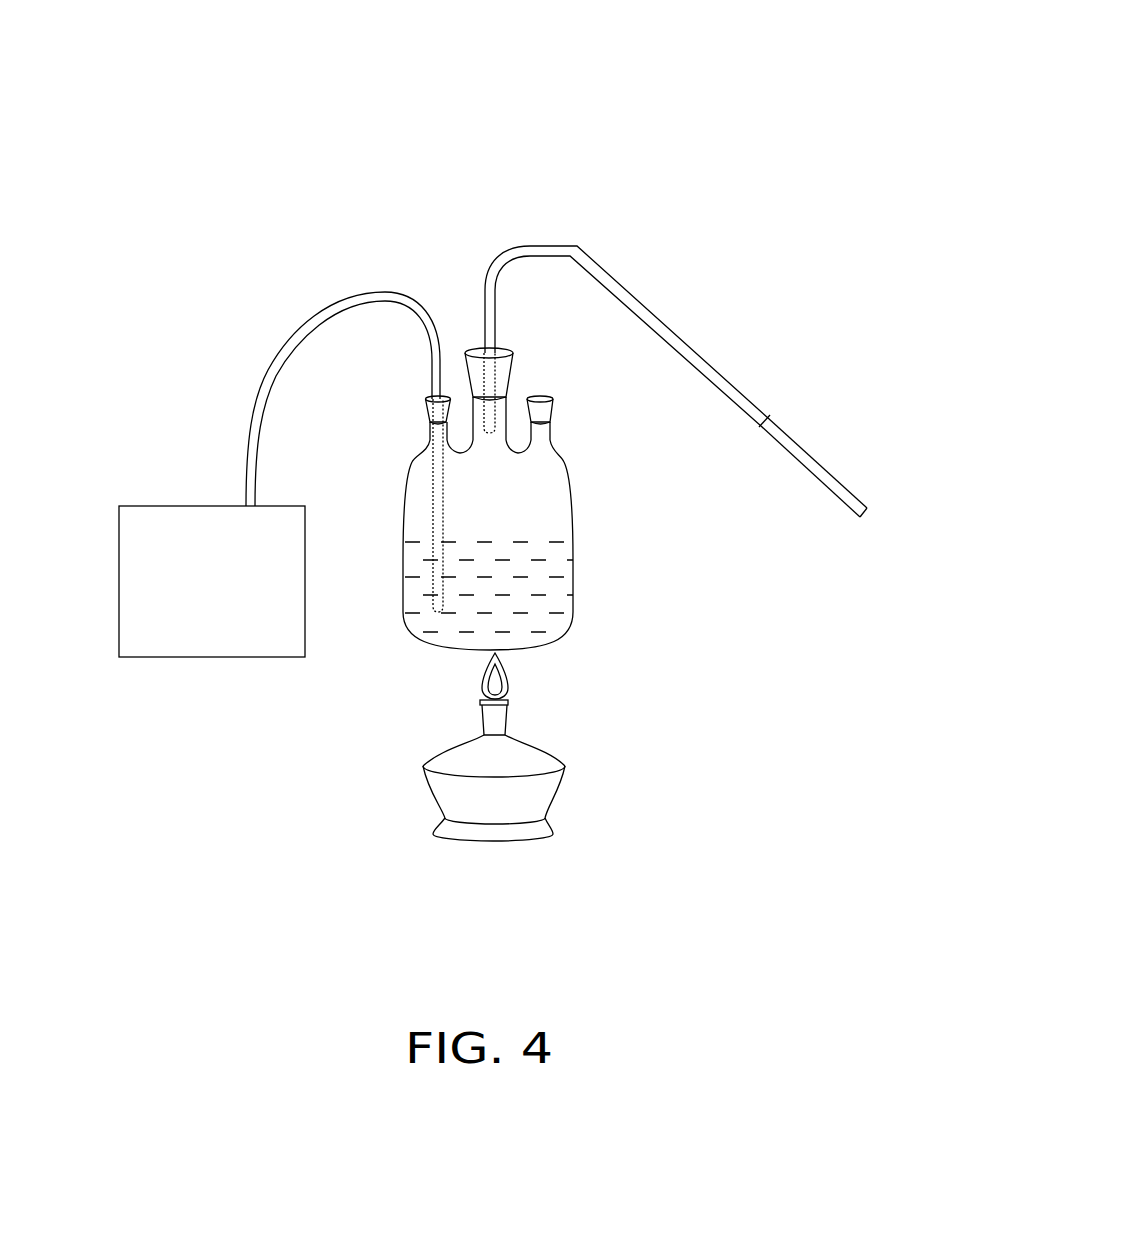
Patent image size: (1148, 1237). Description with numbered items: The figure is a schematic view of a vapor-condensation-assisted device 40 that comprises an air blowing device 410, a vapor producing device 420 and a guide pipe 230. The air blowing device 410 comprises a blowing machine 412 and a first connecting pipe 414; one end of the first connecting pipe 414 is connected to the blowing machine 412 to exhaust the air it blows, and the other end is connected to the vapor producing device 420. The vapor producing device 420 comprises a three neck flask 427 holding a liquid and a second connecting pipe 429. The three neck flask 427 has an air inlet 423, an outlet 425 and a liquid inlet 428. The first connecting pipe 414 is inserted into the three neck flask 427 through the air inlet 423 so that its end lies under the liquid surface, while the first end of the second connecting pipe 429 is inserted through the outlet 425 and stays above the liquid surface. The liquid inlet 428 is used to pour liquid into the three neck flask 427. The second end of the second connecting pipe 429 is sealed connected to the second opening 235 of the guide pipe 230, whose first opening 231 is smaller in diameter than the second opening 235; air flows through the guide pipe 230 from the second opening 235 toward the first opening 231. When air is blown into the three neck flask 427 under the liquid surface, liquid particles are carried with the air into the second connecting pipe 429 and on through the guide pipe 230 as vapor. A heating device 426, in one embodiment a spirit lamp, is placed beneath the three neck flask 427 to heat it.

The vapor-condensation-assisted device 40 is at (436, 84).
The air blowing device 410 is at (179, 322).
The blowing machine 412 is at (226, 520).
The first connecting pipe 414 is at (273, 370).
The vapor producing device 420 is at (652, 355).
The air inlet 423 is at (447, 412).
The outlet 425 is at (508, 370).
The three neck flask 427 is at (535, 521).
The liquid inlet 428 is at (540, 434).
The heating device 426 is at (512, 758).
The second connecting pipe 429 is at (698, 352).
The second opening 235 is at (770, 424).
The guide pipe 230 is at (813, 466).
The first opening 231 is at (862, 520).